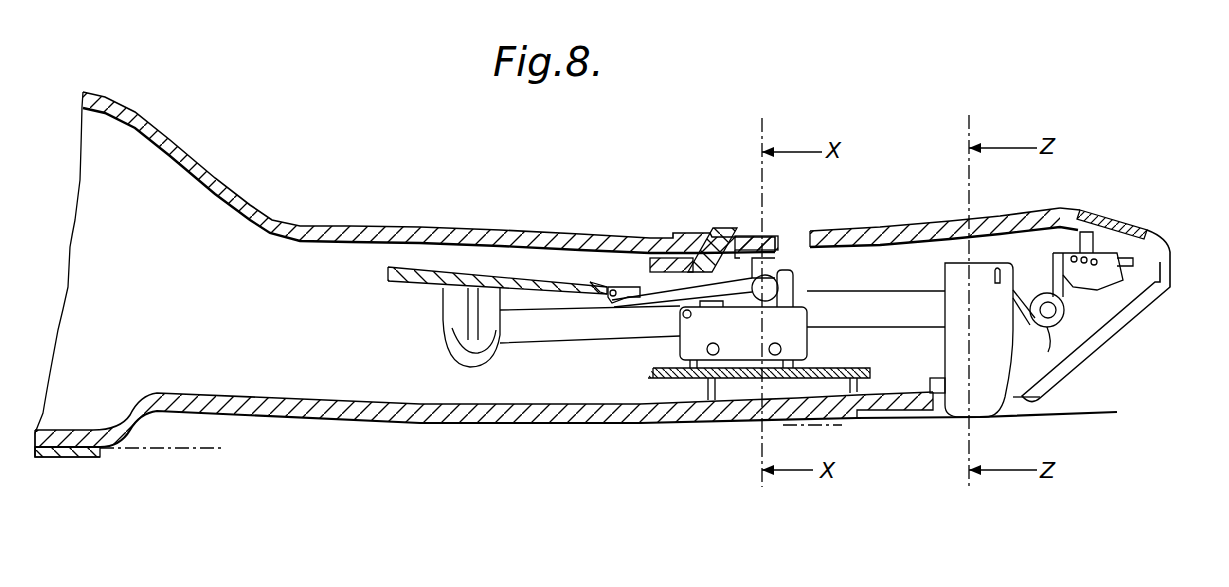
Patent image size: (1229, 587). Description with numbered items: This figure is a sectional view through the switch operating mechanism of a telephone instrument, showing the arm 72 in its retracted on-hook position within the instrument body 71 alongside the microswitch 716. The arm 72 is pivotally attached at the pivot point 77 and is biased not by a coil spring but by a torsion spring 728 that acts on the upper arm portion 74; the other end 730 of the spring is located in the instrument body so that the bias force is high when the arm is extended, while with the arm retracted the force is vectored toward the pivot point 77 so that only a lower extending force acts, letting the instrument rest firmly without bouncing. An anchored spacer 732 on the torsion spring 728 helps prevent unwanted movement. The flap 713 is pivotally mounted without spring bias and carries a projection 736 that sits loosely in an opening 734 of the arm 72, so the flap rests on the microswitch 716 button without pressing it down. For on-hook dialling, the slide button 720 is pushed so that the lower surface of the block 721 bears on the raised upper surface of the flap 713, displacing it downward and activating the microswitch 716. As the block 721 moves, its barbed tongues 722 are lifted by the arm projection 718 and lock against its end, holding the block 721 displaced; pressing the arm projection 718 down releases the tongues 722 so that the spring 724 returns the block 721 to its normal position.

The upper housing wall 71 is at (487, 233).
The arm 72 is at (873, 298).
The arm portion 74 is at (977, 277).
The pivot point 77 is at (470, 323).
The flap 713 is at (680, 338).
The switch 716 is at (722, 302).
The arm projection 718 is at (826, 233).
The slide button 720 is at (730, 226).
The block 721 is at (645, 276).
The tongues 722 is at (782, 250).
The spring 724 is at (710, 230).
The torsion spring 728 is at (1050, 352).
The other end of spring 730 is at (1068, 210).
The anchored spacer 732 is at (1037, 290).
The opening 734 is at (778, 262).
The projection 736 is at (765, 268).